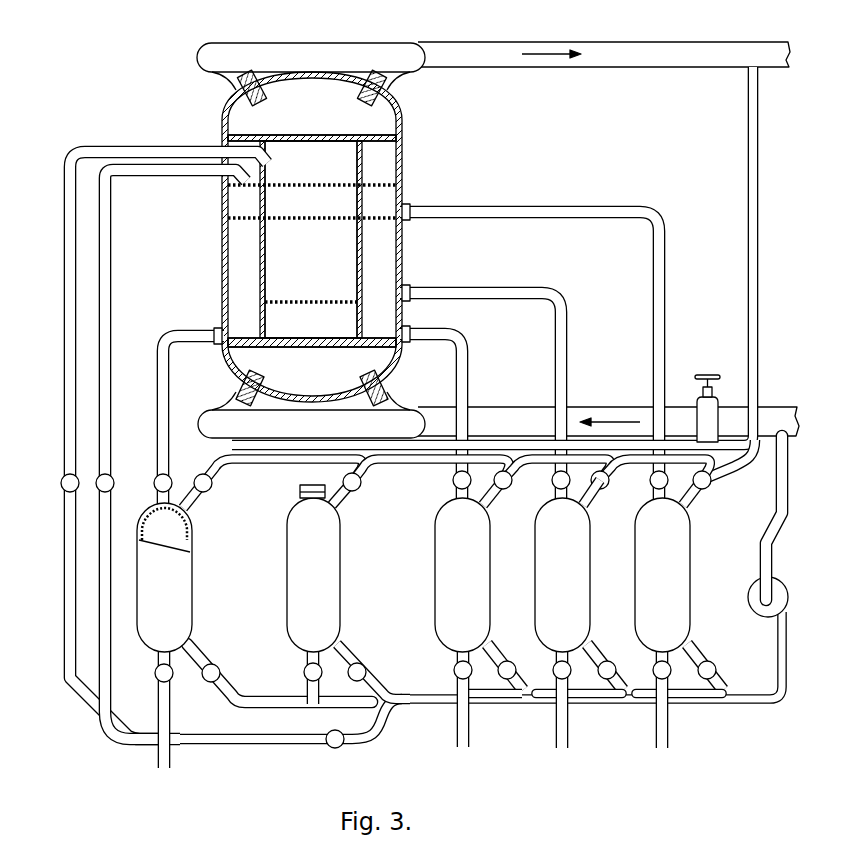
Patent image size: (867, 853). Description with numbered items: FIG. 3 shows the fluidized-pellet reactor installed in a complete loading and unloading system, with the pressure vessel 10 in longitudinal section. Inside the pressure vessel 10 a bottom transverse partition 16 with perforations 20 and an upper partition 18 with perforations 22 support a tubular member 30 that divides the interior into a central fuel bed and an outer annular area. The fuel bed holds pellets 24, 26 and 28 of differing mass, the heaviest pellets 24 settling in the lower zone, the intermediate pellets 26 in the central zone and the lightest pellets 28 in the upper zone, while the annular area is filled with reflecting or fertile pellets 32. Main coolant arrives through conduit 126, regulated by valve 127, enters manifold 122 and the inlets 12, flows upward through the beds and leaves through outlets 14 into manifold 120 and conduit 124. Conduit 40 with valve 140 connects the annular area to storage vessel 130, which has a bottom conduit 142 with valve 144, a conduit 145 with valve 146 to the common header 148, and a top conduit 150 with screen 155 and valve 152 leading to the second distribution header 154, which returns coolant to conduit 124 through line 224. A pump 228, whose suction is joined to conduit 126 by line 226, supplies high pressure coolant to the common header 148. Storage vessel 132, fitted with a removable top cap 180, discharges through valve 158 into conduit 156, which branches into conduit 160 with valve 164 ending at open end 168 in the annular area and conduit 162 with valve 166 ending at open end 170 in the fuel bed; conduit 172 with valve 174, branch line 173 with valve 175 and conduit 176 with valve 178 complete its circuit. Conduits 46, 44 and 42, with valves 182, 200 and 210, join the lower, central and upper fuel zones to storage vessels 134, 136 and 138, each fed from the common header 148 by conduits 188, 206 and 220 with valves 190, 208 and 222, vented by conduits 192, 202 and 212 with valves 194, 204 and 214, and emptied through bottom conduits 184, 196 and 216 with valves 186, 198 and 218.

The pressure vessel 10 is at (400, 256).
The inlets 12 is at (234, 399).
The outlets 14 is at (238, 84).
The transverse partition 16 is at (302, 347).
The second partition 18 is at (284, 131).
The perforations 20 is at (340, 347).
The perforations 22 is at (308, 136).
The pellets 24 is at (300, 300).
The pellets 26 is at (345, 219).
The pellets 28 is at (340, 186).
The tubular member 30 is at (271, 262).
The pellets 32 is at (258, 190).
The conduit 40 is at (180, 332).
The conduit 42 is at (420, 208).
The conduit 44 is at (437, 290).
The conduit 46 is at (435, 330).
The manifold 120 is at (322, 42).
The manifold 122 is at (226, 438).
The conduit 124 is at (628, 43).
The conduit 126 is at (582, 407).
The valve 127 is at (708, 375).
The storage vessel 130 is at (192, 570).
The storage vessel 132 is at (341, 566).
The storage vessel 134 is at (491, 566).
The storage vessel 136 is at (590, 563).
The storage vessel 138 is at (691, 558).
The valve 140 is at (156, 478).
The conduit 142 is at (170, 718).
The valve 144 is at (155, 673).
The conduit 145 is at (224, 684).
The valve 146 is at (214, 664).
The common header 148 is at (516, 704).
The conduit 150 is at (216, 490).
The valve 152 is at (213, 483).
The second distribution header 154 is at (298, 462).
The screen 155 is at (192, 500).
The conduit 156 is at (255, 744).
The valve 158 is at (305, 674).
The conduit 160 is at (106, 648).
The conduit 162 is at (64, 578).
The valve 164 is at (107, 472).
The valve 166 is at (64, 475).
The open end 168 is at (208, 176).
The open end 170 is at (270, 157).
The second conduit 172 is at (349, 656).
The branch line 173 is at (386, 716).
The valve 174 is at (366, 672).
The valve 175 is at (340, 748).
The conduit 176 is at (365, 474).
The valve 178 is at (343, 495).
The removable top cap 180 is at (316, 485).
The valve 182 is at (453, 481).
The conduit 184 is at (455, 672).
The valve 186 is at (457, 664).
The conduit 188 is at (497, 652).
The valve 190 is at (517, 670).
The conduit 192 is at (488, 510).
The valve 194 is at (505, 490).
The conduit 196 is at (567, 740).
The valve 198 is at (567, 708).
The valve 200 is at (519, 474).
The conduit 202 is at (590, 503).
The valve 204 is at (610, 482).
The conduit 206 is at (592, 646).
The valve 208 is at (604, 660).
The valve 210 is at (654, 486).
The conduit 212 is at (694, 494).
The valve 214 is at (711, 480).
The conduit 216 is at (667, 725).
The valve 218 is at (651, 668).
The conduit 220 is at (700, 648).
The valve 222 is at (716, 666).
The line 224 is at (759, 270).
The line 226 is at (772, 532).
The pump 228 is at (755, 584).